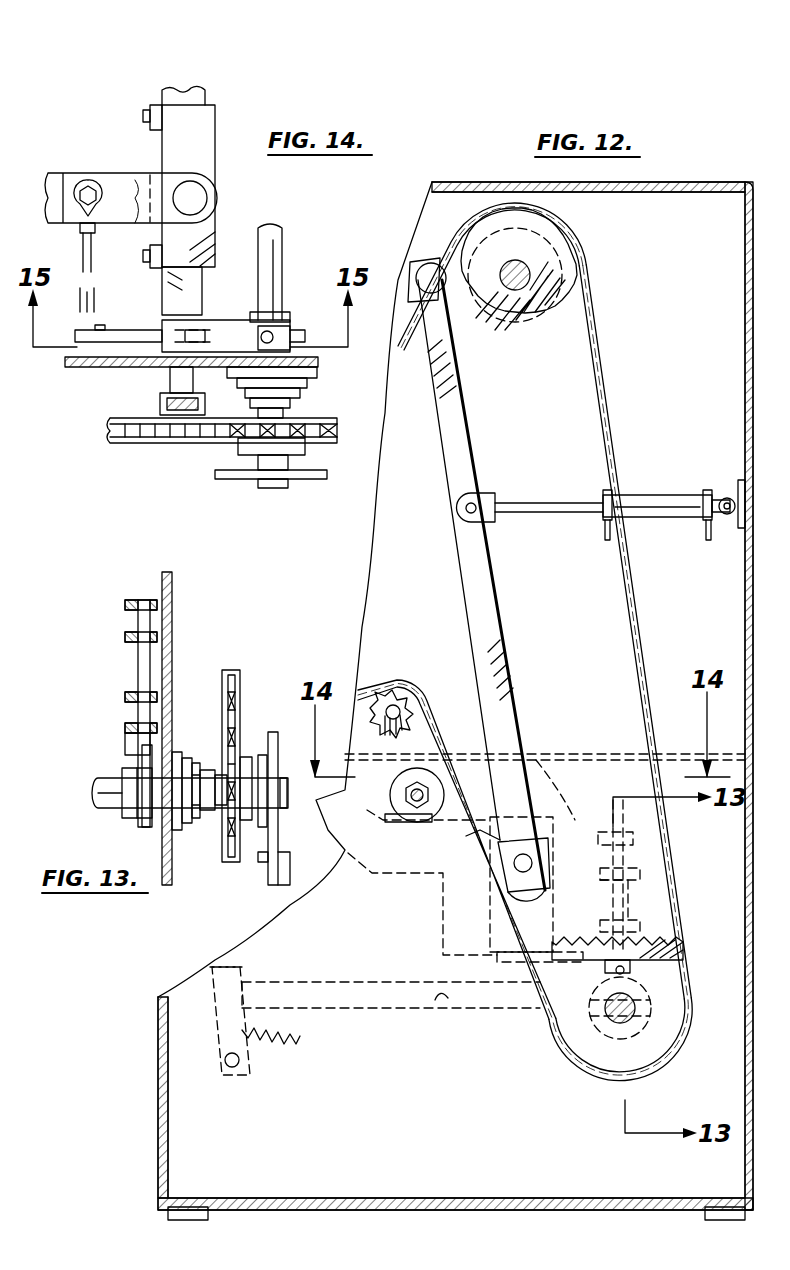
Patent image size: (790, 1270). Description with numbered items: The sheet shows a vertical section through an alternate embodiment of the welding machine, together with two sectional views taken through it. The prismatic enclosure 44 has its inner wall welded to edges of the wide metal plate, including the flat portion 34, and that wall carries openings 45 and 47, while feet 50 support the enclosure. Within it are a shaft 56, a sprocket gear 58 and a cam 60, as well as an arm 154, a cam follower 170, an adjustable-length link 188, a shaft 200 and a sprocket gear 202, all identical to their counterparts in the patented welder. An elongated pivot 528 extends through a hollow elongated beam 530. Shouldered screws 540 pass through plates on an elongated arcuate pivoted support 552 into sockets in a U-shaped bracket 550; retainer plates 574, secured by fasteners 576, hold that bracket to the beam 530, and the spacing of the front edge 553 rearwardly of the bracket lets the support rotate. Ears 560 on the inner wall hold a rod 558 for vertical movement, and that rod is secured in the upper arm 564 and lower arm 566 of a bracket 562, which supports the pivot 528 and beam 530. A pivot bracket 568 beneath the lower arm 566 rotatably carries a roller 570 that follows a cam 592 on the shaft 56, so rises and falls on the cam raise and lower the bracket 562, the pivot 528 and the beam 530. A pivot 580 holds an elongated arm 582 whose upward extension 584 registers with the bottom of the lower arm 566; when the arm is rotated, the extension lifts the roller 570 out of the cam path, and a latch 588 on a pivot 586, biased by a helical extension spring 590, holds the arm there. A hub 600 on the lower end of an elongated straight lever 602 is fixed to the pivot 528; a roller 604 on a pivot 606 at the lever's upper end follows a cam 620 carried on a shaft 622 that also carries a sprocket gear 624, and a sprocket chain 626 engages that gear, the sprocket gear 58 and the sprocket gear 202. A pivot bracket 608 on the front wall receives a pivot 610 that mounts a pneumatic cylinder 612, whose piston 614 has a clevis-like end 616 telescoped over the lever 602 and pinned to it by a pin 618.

In FIG. 12, the flat portion 34 is at (675, 752).
In FIG. 12, the prismatic enclosure 44 is at (158, 1068).
In FIG. 14, the prismatic enclosure 44 is at (81, 370).
In FIG. 13, the prismatic enclosure 44 is at (173, 596).
In FIG. 12, the opening 45 is at (390, 792).
In FIG. 12, the opening 47 is at (490, 927).
In FIG. 12, the feet 50 is at (168, 1214).
In FIG. 12, the shaft 56 is at (615, 1024).
In FIG. 14, the shaft 56 is at (267, 229).
In FIG. 13, the shaft 56 is at (94, 795).
In FIG. 12, the sprocket gear 58 is at (686, 1020).
In FIG. 14, the sprocket gear 58 is at (305, 448).
In FIG. 13, the sprocket gear 58 is at (250, 820).
In FIG. 14, the cam 60 is at (289, 480).
In FIG. 13, the cam 60 is at (273, 732).
In FIG. 13, the arm 154 is at (285, 886).
In FIG. 13, the cam follower 170 is at (263, 862).
In FIG. 12, the adjustable-length link 188 is at (415, 808).
In FIG. 14, the adjustable-length link 188 is at (83, 250).
In FIG. 12, the shaft 200 is at (400, 706).
In FIG. 12, the sprocket gear 202 is at (387, 683).
In FIG. 12, the elongated pivot 528 is at (505, 880).
In FIG. 14, the elongated pivot 528 is at (170, 379).
In FIG. 12, the hollow elongated beam 530 is at (594, 874).
In FIG. 14, the hollow elongated beam 530 is at (190, 88).
In FIG. 12, the shouldered screws 540 is at (539, 762).
In FIG. 14, the shouldered screws 540 is at (207, 194).
In FIG. 14, the U-shaped bracket 550 is at (214, 125).
In FIG. 12, the elongated arcuate pivoted support 552 is at (348, 853).
In FIG. 14, the elongated arcuate pivoted support 552 is at (87, 170).
In FIG. 14, the front edge 553 is at (130, 182).
In FIG. 12, the rod 558 is at (650, 858).
In FIG. 14, the rod 558 is at (300, 352).
In FIG. 13, the rod 558 is at (138, 710).
In FIG. 12, the ears 560 is at (640, 918).
In FIG. 14, the ears 560 is at (310, 370).
In FIG. 13, the ears 560 is at (125, 696).
In FIG. 12, the bracket 562 is at (563, 901).
In FIG. 12, the upper arm 564 is at (597, 822).
In FIG. 14, the upper arm 564 is at (261, 310).
In FIG. 13, the upper arm 564 is at (125, 604).
In FIG. 12, the lower arm 566 is at (575, 942).
In FIG. 13, the lower arm 566 is at (125, 727).
In FIG. 13, the pivot bracket 568 is at (125, 743).
In FIG. 12, the roller 570 is at (560, 1018).
In FIG. 13, the roller 570 is at (142, 759).
In FIG. 14, the retainer plates 574 is at (156, 105).
In FIG. 14, the fasteners 576 is at (141, 114).
In FIG. 12, the pivot 580 is at (434, 1004).
In FIG. 14, the pivot 580 is at (98, 330).
In FIG. 12, the elongated arm 582 is at (343, 980).
In FIG. 14, the elongated arm 582 is at (78, 340).
In FIG. 12, the upward extension 584 is at (508, 975).
In FIG. 14, the upward extension 584 is at (212, 330).
In FIG. 12, the pivot 586 is at (231, 1068).
In FIG. 12, the latch 588 is at (215, 962).
In FIG. 12, the helical extension spring 590 is at (261, 1050).
In FIG. 12, the cam 592 is at (573, 1050).
In FIG. 14, the cam 592 is at (296, 326).
In FIG. 13, the cam 592 is at (130, 818).
In FIG. 12, the hub 600 is at (540, 840).
In FIG. 14, the hub 600 is at (160, 405).
In FIG. 12, the elongated straight lever 602 is at (492, 596).
In FIG. 14, the elongated straight lever 602 is at (181, 410).
In FIG. 12, the roller 604 is at (427, 262).
In FIG. 12, the pivot 606 is at (416, 277).
In FIG. 12, the pivot bracket 608 is at (730, 498).
In FIG. 12, the pivot 610 is at (727, 514).
In FIG. 12, the pneumatic cylinder 612 is at (641, 494).
In FIG. 12, the piston 614 is at (528, 514).
In FIG. 12, the clevis-like end 616 is at (488, 496).
In FIG. 12, the pin 618 is at (460, 517).
In FIG. 12, the cam 620 is at (582, 262).
In FIG. 12, the shaft 622 is at (518, 261).
In FIG. 12, the sprocket gear 624 is at (528, 330).
In FIG. 12, the sprocket chain 626 is at (638, 604).
In FIG. 14, the sprocket chain 626 is at (110, 440).
In FIG. 13, the sprocket chain 626 is at (240, 675).